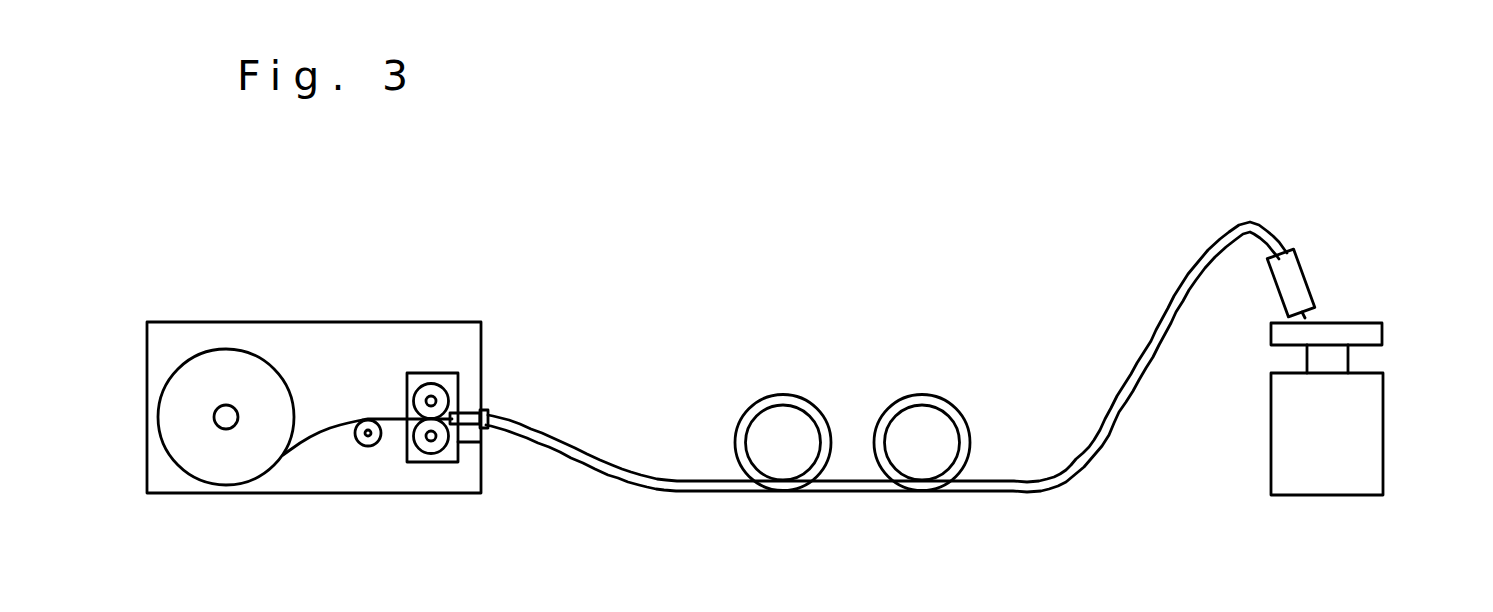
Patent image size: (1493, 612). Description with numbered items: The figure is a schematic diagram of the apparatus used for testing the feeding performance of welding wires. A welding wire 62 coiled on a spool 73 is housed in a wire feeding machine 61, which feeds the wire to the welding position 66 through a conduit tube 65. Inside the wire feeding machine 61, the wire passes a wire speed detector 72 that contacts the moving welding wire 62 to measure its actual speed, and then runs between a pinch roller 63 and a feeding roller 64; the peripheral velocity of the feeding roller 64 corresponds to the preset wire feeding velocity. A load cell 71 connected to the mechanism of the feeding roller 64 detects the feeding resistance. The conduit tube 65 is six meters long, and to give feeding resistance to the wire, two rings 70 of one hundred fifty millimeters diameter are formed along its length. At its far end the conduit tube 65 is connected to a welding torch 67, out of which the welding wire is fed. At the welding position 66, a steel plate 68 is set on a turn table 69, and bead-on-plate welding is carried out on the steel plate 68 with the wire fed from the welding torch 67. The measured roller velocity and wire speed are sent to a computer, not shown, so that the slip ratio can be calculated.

The wire feeding machine 61 is at (382, 305).
The welding wire 62 is at (340, 427).
The pinch roller 63 is at (447, 382).
The feeding roller 64 is at (430, 454).
The conduit tube 65 is at (685, 493).
The welding position 66 is at (1379, 318).
The welding torch 67 is at (1298, 275).
The steel plate 68 is at (1378, 335).
The turn table 69 is at (1373, 388).
The rings 70 is at (900, 403).
The load cell 71 is at (477, 452).
The wire speed detector 72 is at (367, 443).
The spool 73 is at (226, 363).